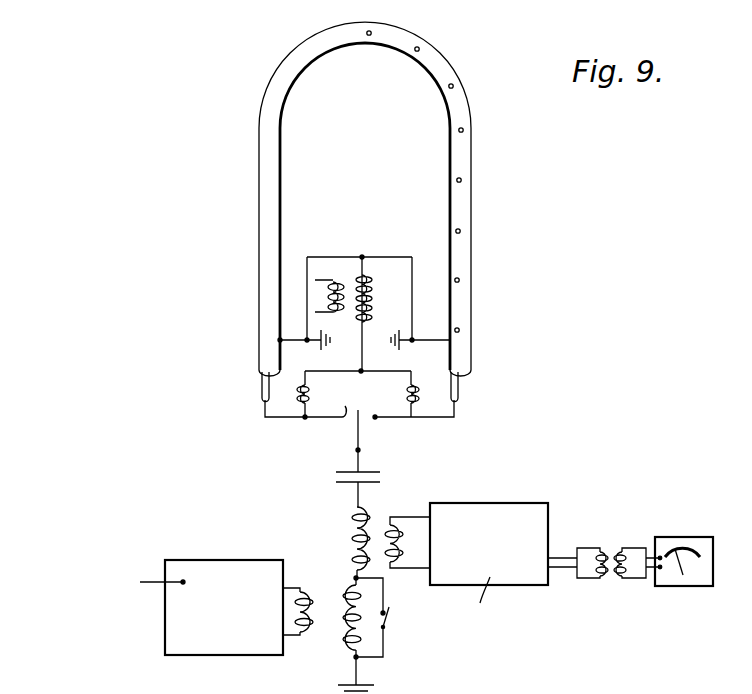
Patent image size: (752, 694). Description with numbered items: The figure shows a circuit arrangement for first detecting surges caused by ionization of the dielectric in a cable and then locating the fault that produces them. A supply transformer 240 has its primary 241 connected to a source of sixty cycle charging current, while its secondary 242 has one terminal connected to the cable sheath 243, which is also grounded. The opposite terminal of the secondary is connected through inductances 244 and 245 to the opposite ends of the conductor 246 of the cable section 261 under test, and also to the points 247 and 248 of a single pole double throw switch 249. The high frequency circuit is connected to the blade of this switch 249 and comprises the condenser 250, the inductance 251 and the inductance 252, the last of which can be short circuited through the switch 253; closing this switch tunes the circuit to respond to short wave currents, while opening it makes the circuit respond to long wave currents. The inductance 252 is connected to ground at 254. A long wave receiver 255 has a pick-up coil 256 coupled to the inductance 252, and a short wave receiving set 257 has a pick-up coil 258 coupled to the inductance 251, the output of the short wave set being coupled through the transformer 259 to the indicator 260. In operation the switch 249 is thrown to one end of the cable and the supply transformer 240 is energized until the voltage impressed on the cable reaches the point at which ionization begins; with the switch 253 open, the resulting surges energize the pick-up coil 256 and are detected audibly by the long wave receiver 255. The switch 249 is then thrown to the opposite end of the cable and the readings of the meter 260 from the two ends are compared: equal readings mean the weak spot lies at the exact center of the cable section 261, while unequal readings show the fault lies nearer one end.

The supply transformer 240 is at (347, 292).
The primary 241 is at (330, 282).
The secondary 242 is at (367, 308).
The cable sheath 243 is at (278, 293).
The inductance 244 is at (305, 402).
The inductance 245 is at (412, 403).
The conductor 246 is at (262, 392).
The point 247 is at (358, 393).
The point 248 is at (376, 418).
The single pole double throw switch 249 is at (358, 438).
The condenser 250 is at (365, 481).
The inductance 251 is at (357, 517).
The inductance 252 is at (342, 610).
The switch 253 is at (390, 615).
The ground 254 is at (356, 673).
The long wave receiver 255 is at (215, 568).
The pick-up coil 256 is at (307, 622).
The short wave receiving set 257 is at (495, 518).
The pick-up coil 258 is at (400, 540).
The transformer 259 is at (620, 550).
The indicator 260 is at (684, 540).
The cable section 261 is at (462, 161).